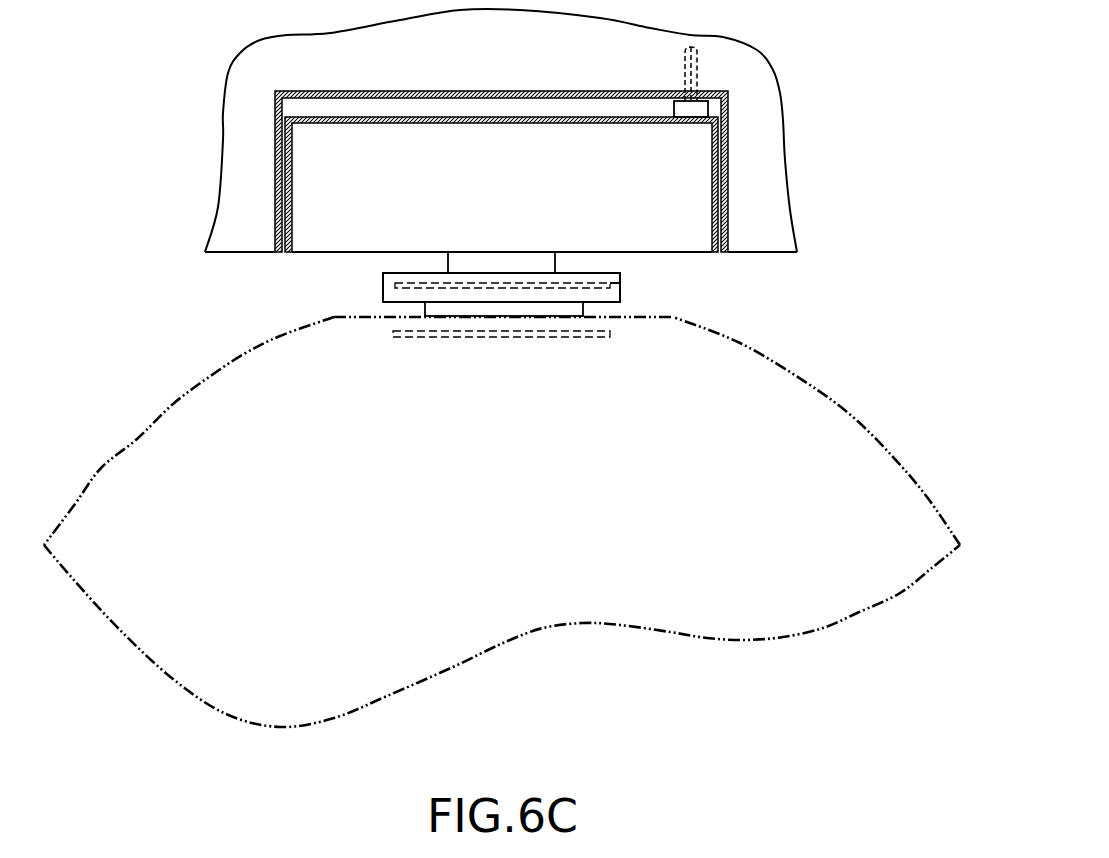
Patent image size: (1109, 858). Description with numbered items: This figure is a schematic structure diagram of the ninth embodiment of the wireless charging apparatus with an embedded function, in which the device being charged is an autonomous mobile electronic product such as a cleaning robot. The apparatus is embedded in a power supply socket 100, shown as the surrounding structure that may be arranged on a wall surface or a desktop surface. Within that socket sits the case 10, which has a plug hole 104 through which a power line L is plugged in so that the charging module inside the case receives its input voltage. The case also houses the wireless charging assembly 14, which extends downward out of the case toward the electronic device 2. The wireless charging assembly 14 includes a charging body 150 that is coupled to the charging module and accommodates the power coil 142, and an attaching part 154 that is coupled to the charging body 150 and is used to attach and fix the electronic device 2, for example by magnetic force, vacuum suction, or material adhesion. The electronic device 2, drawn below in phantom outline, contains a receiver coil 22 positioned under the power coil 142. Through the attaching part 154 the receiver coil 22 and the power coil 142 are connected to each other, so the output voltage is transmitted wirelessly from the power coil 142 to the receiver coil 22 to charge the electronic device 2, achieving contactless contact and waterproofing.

The electronic device 2 is at (178, 416).
The case 10 is at (287, 253).
The wireless charging assembly 14 is at (652, 277).
The receiver coil 22 is at (525, 337).
The power supply socket 100 is at (277, 200).
The plug hole 104 is at (705, 108).
The power coil 142 is at (627, 287).
The charging body 150 is at (383, 281).
The attaching part 154 is at (425, 308).
The power line L is at (697, 68).